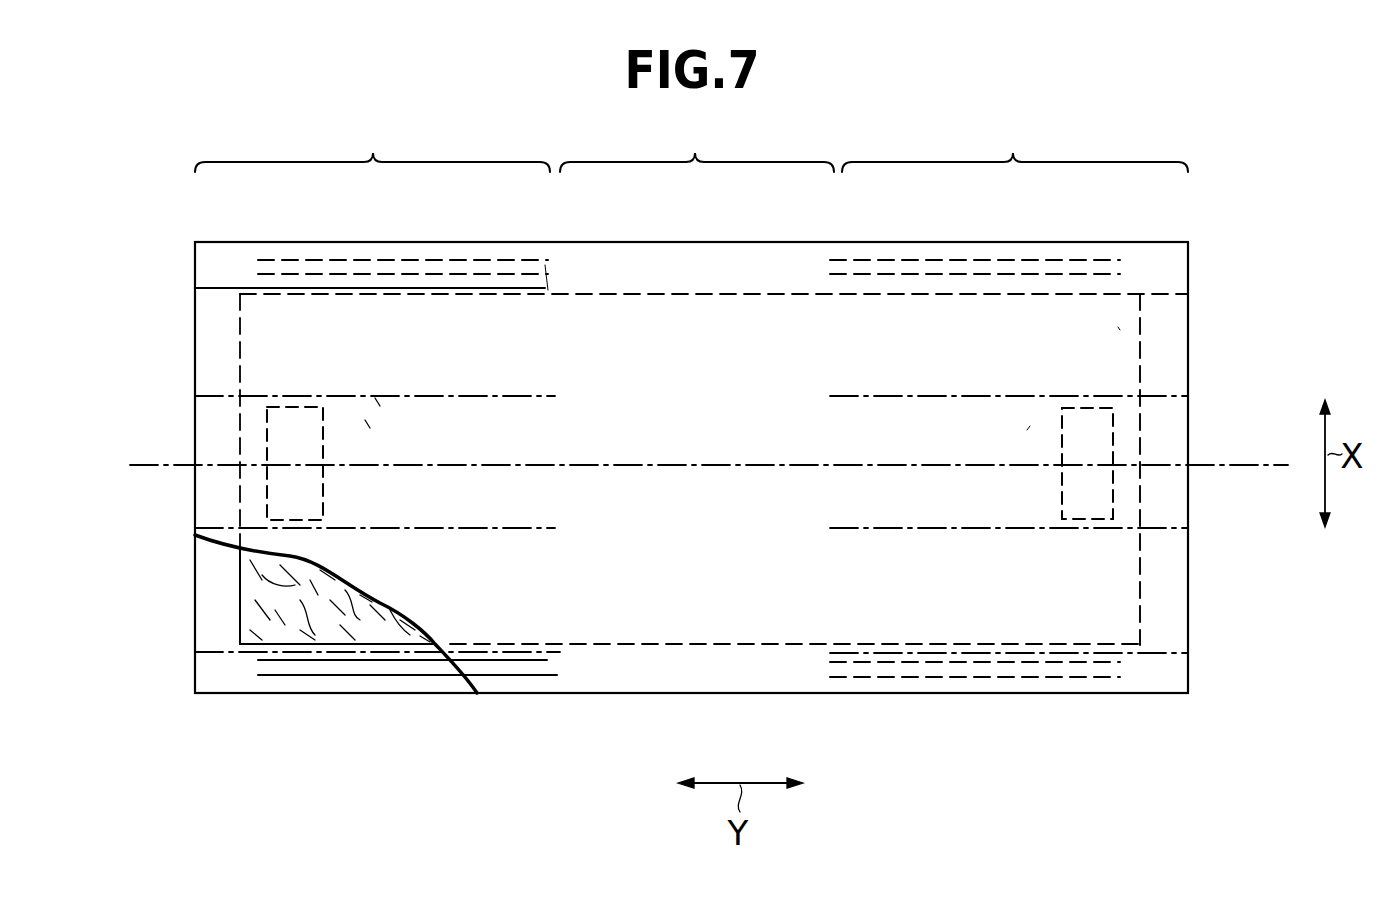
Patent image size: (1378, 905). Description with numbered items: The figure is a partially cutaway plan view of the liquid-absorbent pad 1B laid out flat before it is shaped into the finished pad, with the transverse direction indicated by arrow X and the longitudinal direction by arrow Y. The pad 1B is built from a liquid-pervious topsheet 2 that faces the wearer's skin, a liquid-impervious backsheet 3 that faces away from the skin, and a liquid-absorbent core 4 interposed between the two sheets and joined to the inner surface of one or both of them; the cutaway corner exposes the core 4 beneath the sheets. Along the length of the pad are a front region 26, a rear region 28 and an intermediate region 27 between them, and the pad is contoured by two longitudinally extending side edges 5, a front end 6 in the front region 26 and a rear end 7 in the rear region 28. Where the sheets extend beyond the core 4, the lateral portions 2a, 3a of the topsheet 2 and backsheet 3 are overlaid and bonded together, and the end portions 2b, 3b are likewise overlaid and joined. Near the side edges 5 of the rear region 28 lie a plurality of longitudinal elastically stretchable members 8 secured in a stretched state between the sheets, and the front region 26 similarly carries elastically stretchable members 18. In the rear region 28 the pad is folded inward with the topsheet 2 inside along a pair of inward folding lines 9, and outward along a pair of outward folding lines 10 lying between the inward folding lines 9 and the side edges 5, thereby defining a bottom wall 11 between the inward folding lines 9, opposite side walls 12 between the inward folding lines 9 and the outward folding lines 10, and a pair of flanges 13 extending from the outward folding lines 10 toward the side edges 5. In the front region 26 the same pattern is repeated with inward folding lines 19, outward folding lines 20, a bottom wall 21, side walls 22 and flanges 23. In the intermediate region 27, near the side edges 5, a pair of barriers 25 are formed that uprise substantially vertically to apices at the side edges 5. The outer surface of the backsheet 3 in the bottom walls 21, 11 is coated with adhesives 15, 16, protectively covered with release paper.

The liquid-absorbent pad 1B is at (1188, 242).
The liquid-pervious topsheet 2 is at (811, 290).
The lateral portion of the topsheet 2a is at (848, 262).
The end portion of the topsheet 2b is at (1170, 437).
The liquid-impervious backsheet 3 is at (222, 612).
The lateral portion of the backsheet 3a is at (357, 665).
The end portion of the backsheet 3b is at (208, 571).
The liquid-absorbent core 4 is at (292, 640).
The side edges 5 is at (768, 242).
The front end 6 is at (1188, 360).
The rear end 7 is at (195, 400).
The elastically stretchable members 8 is at (449, 252).
The inward folding lines 9 is at (505, 395).
The outward folding lines 10 is at (557, 243).
The bottom wall 11 is at (385, 435).
The side walls 12 is at (395, 320).
The flanges 13 is at (547, 288).
The self-adhesive 15 is at (1095, 490).
The adhesive 16 is at (275, 432).
The elastically stretchable members 18 is at (1088, 268).
The inward folding lines 19 is at (938, 396).
The outward folding lines 20 is at (1020, 292).
The bottom wall 21 is at (1118, 327).
The side walls 22 is at (1027, 430).
The flanges 23 is at (927, 275).
The barriers 25 is at (716, 278).
The front region 26 is at (1015, 143).
The intermediate region 27 is at (697, 143).
The rear region 28 is at (372, 140).